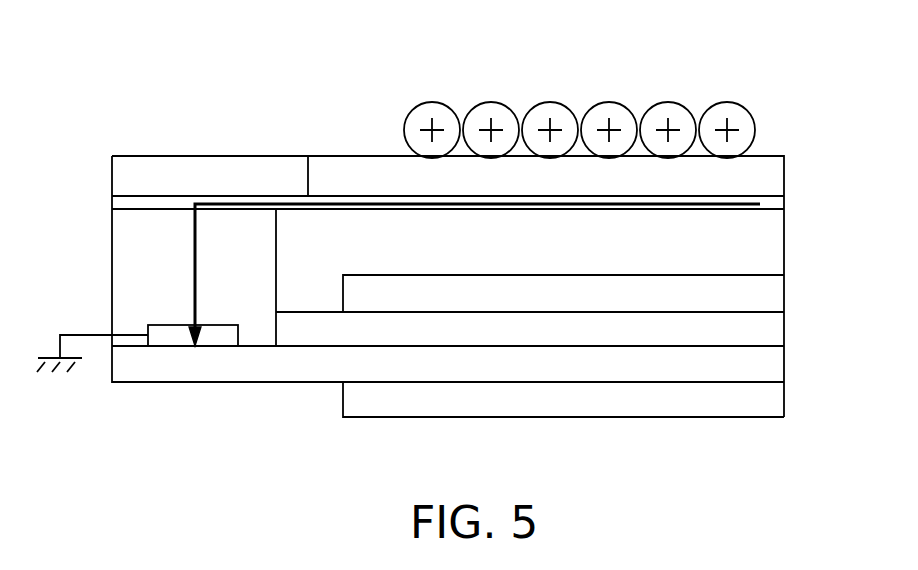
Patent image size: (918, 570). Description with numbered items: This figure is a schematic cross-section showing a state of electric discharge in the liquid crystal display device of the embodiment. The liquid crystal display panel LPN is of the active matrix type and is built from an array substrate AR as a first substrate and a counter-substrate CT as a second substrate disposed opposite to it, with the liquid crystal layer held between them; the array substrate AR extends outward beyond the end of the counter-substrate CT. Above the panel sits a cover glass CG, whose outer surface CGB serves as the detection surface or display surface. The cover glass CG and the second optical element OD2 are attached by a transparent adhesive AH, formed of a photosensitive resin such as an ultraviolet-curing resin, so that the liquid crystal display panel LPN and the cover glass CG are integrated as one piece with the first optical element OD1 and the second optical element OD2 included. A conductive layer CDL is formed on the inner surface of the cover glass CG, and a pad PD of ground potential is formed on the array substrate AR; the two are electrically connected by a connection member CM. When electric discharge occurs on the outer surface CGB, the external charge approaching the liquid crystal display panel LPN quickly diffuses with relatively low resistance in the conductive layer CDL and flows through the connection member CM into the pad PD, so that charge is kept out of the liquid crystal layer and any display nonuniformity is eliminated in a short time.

The array substrate AR is at (157, 367).
The cover glass CG is at (770, 175).
The conductive layer CDL is at (770, 207).
The connection member CM is at (135, 259).
The adhesive AH is at (770, 245).
The second optical element OD2 is at (758, 292).
The liquid crystal display panel LPN is at (787, 359).
The first optical element OD1 is at (758, 402).
The pad PD is at (220, 338).
The counter-substrate CT is at (315, 333).
The outer surface CGB is at (698, 156).